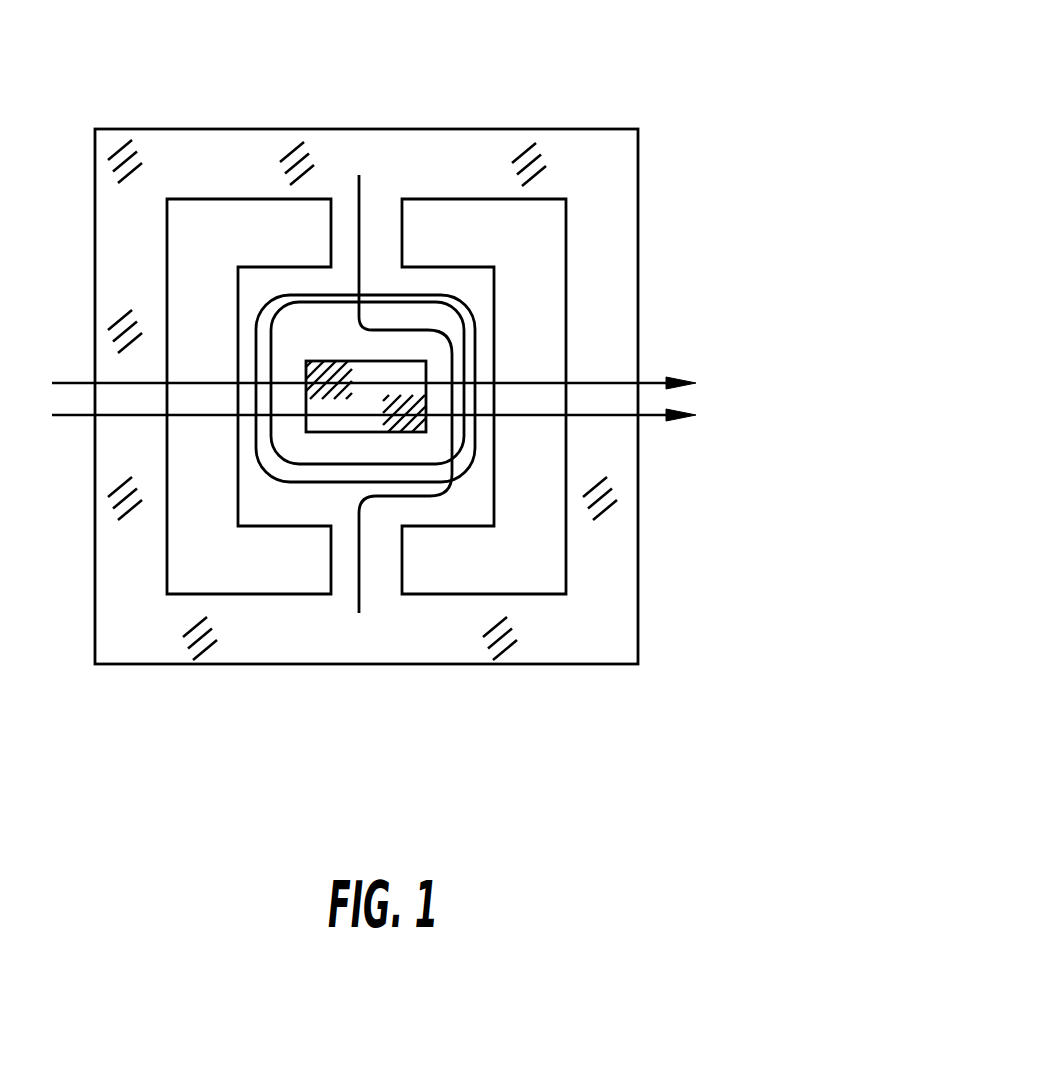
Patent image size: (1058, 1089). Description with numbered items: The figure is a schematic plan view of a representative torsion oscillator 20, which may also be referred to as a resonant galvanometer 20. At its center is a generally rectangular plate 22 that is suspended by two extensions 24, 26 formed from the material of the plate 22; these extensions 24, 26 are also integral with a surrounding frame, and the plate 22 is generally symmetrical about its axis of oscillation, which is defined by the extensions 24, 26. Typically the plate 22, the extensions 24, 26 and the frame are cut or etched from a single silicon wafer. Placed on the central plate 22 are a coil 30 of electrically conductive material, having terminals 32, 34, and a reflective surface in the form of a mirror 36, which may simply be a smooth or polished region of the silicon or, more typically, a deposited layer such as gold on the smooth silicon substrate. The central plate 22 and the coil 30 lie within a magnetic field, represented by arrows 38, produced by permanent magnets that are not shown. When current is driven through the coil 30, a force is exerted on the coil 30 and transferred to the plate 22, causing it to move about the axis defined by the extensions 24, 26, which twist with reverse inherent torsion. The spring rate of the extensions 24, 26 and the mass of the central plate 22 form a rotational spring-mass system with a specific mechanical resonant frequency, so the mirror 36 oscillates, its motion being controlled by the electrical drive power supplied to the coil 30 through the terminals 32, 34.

The torsion oscillator 20 is at (795, 90).
The central generally rectangular plate 22 is at (471, 504).
The extension 24 is at (383, 213).
The extension 26 is at (380, 577).
The coil 30 is at (470, 317).
The terminal 32 is at (357, 202).
The terminal 34 is at (357, 603).
The mirror 36 is at (351, 426).
The arrows representing magnetic field 38 is at (610, 330).